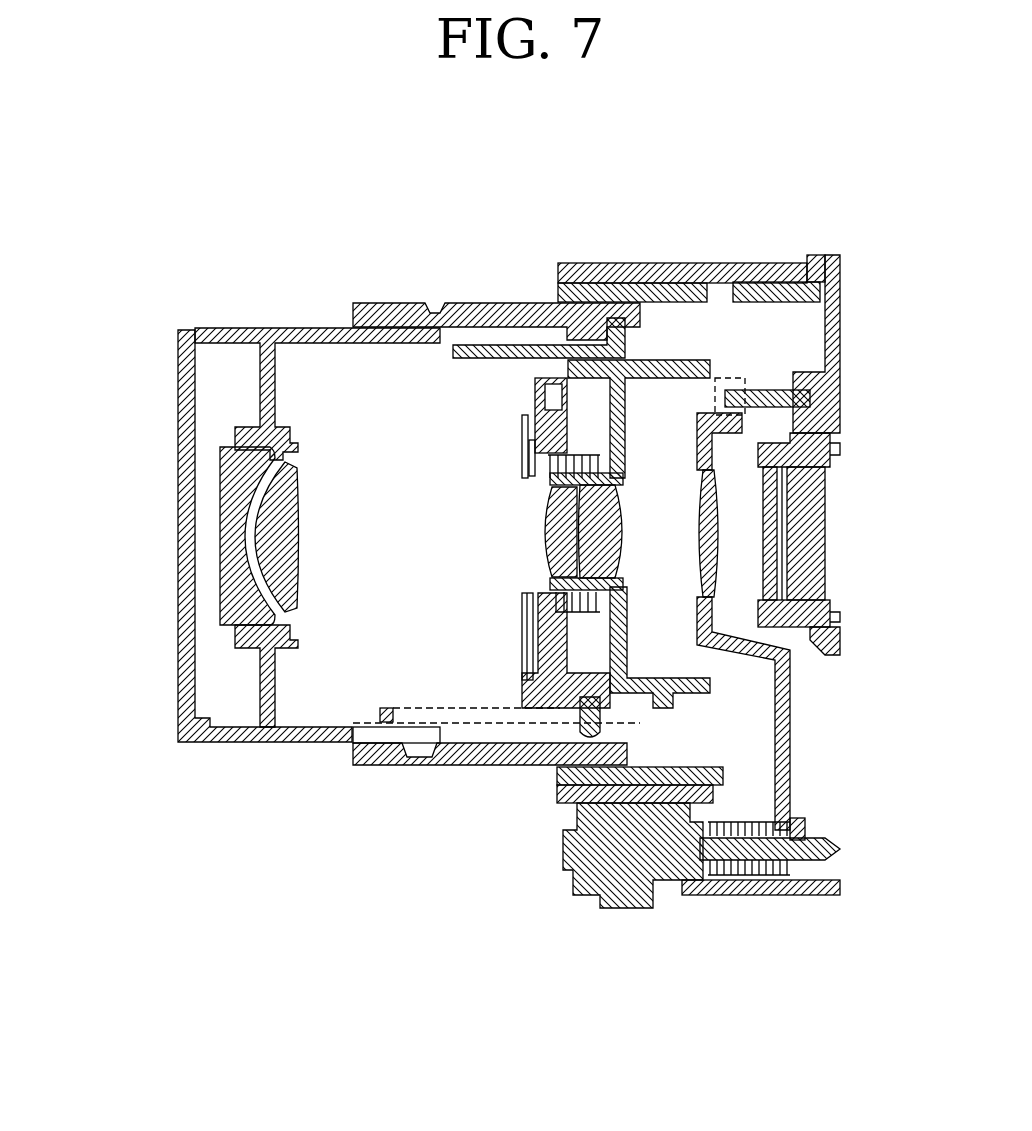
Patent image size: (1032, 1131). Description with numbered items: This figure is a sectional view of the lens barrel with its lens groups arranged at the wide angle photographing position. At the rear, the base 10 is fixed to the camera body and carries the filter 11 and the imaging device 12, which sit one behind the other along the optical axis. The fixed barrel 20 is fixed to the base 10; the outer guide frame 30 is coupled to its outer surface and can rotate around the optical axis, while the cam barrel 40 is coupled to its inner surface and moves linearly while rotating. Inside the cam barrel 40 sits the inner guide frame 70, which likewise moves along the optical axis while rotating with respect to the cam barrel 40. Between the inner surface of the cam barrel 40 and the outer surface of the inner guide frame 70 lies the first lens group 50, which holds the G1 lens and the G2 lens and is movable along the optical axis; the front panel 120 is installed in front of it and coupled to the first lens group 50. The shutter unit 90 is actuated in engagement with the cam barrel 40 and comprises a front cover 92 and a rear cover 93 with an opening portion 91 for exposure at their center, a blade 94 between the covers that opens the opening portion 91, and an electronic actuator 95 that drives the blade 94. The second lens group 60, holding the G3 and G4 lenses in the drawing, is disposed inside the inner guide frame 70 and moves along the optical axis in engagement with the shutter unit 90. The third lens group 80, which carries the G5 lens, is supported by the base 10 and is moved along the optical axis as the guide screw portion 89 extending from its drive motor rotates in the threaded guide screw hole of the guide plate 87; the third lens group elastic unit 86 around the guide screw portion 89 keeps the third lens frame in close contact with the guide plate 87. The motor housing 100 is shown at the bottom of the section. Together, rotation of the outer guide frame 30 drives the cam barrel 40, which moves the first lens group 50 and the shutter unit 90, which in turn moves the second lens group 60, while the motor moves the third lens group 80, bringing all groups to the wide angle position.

The base 10 is at (841, 274).
The filter 11 is at (779, 500).
The imaging device 12 is at (818, 543).
The fixed barrel 20 is at (815, 254).
The outer guide frame 30 is at (752, 265).
The cam barrel 40 is at (491, 302).
The first lens group 50 is at (313, 354).
The second lens group 60 is at (634, 641).
The inner guide frame 70 is at (456, 359).
The third lens group 80 is at (796, 745).
The third lens group elastic unit 86 is at (733, 876).
The guide plate 87 is at (806, 828).
The guide screw portion 89 is at (787, 862).
The shutter unit 90 is at (520, 632).
The opening portion 91 is at (533, 557).
The front cover 92 is at (522, 461).
The rear cover 93 is at (541, 452).
The blade 94 is at (546, 474).
The electronic actuator 95 is at (537, 398).
The motor housing 100 is at (591, 904).
The front panel 120 is at (172, 640).
The G1 lens G1 is at (238, 518).
The G2 lens G2 is at (284, 520).
The third lens G3 is at (560, 538).
The fourth lens G4 is at (605, 548).
The G5 lens G5 is at (704, 497).